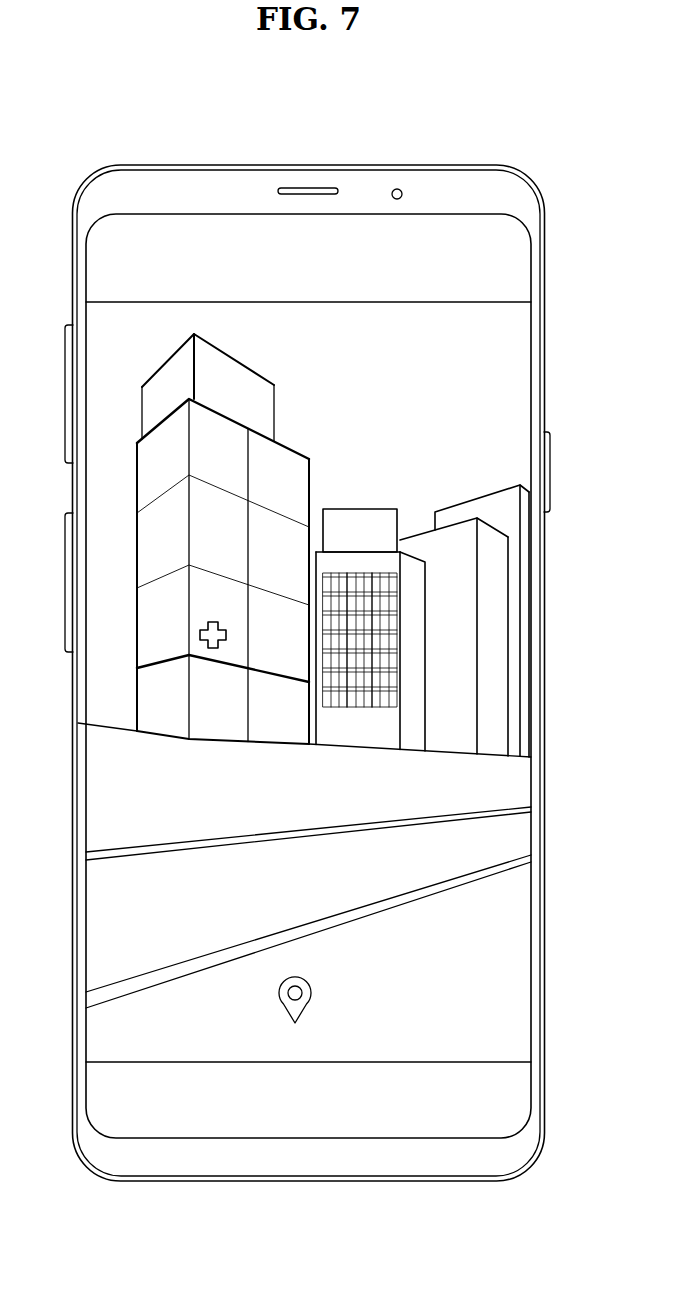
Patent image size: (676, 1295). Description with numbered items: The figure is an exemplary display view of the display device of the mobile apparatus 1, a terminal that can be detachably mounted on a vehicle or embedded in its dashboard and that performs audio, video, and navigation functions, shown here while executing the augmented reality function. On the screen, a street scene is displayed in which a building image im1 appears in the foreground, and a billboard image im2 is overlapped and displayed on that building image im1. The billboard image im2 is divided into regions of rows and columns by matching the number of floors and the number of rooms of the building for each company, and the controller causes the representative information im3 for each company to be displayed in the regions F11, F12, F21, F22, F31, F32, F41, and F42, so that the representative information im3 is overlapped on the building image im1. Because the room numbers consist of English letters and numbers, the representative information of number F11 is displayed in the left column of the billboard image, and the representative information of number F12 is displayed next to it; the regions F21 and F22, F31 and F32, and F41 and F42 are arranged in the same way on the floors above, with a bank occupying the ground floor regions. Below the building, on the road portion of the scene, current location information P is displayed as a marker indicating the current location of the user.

The mobile apparatus 1 is at (464, 130).
The building image im1 is at (253, 373).
The billboard image im2 is at (180, 740).
The representative information im3 is at (238, 730).
The current location information P is at (313, 990).
The region of number F11 is at (216, 683).
The region of number F12 is at (273, 696).
The region of number F21 is at (213, 598).
The region of number F22 is at (269, 613).
The region of number F31 is at (213, 518).
The region of number F32 is at (272, 541).
The region of number F41 is at (213, 443).
The region of number F42 is at (273, 466).